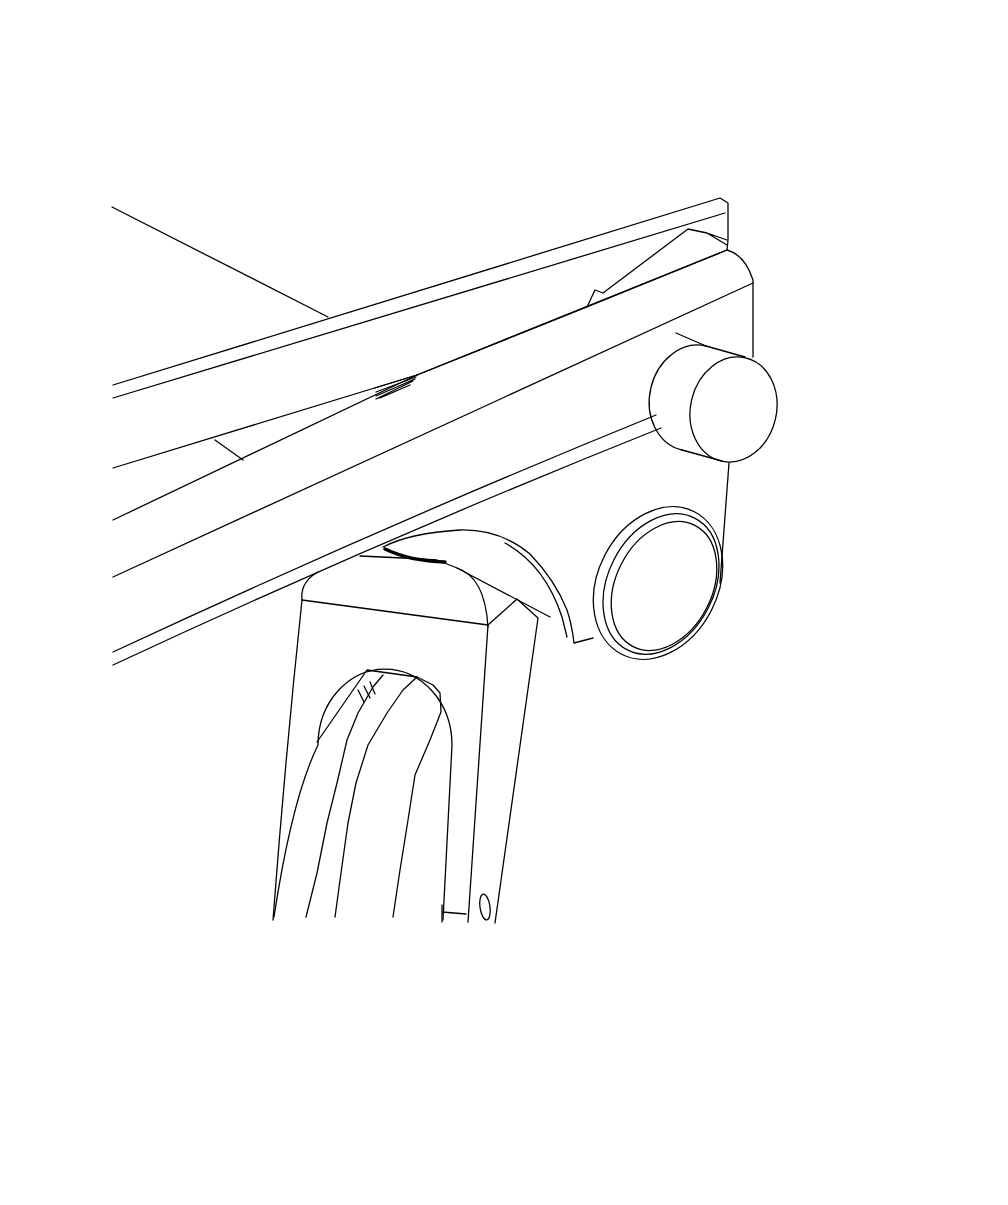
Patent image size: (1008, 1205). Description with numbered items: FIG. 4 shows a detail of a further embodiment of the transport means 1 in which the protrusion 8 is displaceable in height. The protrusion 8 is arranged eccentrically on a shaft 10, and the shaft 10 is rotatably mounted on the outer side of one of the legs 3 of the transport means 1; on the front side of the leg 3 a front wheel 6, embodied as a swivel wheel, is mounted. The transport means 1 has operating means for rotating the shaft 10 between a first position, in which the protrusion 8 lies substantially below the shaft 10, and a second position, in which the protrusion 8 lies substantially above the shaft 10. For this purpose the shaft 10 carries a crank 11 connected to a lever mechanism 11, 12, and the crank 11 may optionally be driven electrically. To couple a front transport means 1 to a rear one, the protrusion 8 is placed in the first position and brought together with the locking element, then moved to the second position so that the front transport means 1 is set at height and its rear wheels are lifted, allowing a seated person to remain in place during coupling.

The transport means 1 is at (509, 200).
The leg 3 is at (205, 575).
The front wheel 6 is at (408, 753).
The protrusion 8 is at (737, 420).
The shaft 10 is at (688, 338).
The crank 11 is at (680, 252).
The lever mechanism 12 is at (430, 317).